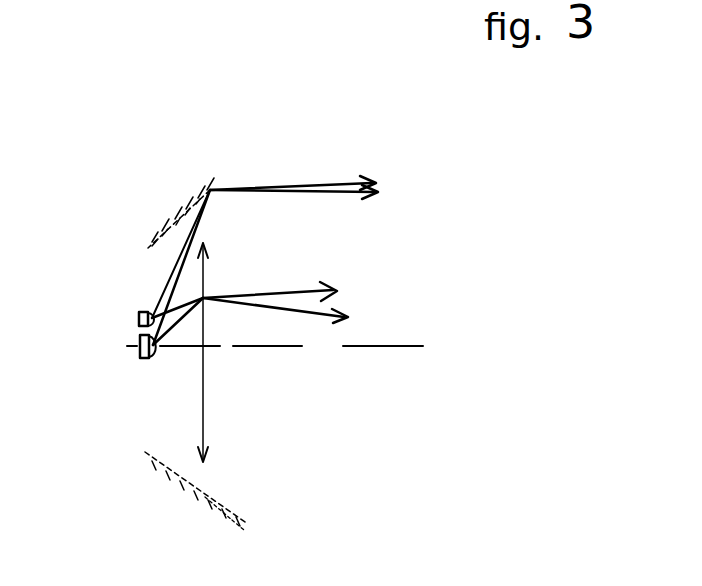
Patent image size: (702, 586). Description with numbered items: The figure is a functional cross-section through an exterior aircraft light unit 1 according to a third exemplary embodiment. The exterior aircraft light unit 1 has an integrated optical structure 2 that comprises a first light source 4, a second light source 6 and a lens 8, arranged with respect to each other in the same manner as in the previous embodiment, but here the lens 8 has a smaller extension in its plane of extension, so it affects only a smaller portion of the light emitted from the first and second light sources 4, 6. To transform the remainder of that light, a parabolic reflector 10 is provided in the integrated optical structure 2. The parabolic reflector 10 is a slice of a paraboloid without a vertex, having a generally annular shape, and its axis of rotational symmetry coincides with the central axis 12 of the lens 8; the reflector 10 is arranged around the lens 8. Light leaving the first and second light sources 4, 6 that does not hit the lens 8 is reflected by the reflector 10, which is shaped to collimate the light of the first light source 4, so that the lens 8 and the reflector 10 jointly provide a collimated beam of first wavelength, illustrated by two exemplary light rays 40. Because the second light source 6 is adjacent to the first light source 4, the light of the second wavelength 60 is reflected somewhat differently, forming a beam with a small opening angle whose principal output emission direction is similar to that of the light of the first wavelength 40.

The exterior aircraft light unit 1 is at (448, 228).
The integrated optical structure 2 is at (121, 437).
The first light source 4 is at (139, 358).
The second light source 6 is at (138, 318).
The lens 8 is at (203, 413).
The parabolic reflector 10 is at (200, 502).
The central axis 12 is at (400, 344).
The light rays of the first wavelength 40 is at (307, 193).
The light of the second wavelength 60 is at (287, 177).